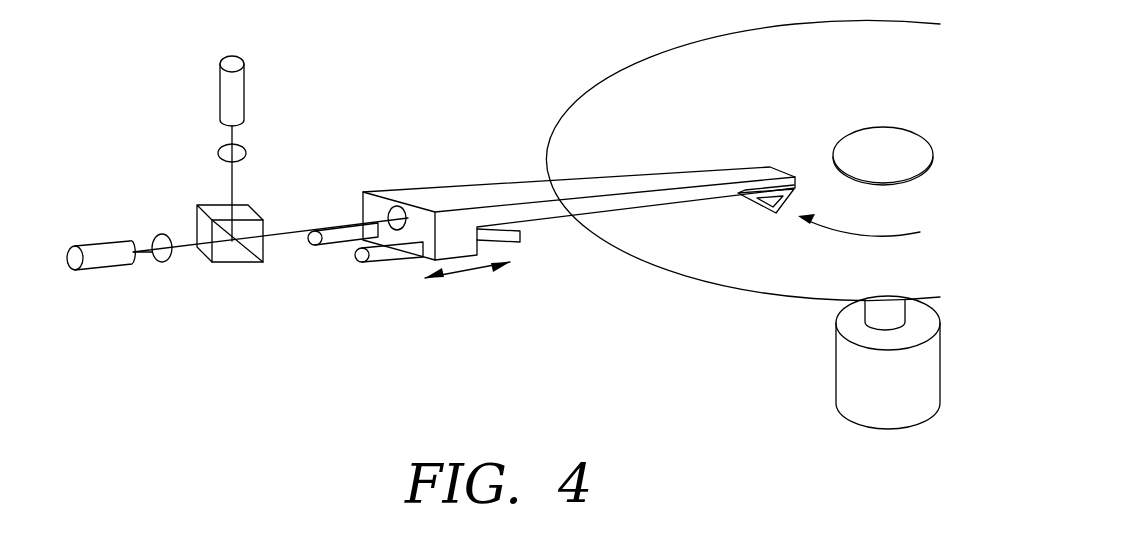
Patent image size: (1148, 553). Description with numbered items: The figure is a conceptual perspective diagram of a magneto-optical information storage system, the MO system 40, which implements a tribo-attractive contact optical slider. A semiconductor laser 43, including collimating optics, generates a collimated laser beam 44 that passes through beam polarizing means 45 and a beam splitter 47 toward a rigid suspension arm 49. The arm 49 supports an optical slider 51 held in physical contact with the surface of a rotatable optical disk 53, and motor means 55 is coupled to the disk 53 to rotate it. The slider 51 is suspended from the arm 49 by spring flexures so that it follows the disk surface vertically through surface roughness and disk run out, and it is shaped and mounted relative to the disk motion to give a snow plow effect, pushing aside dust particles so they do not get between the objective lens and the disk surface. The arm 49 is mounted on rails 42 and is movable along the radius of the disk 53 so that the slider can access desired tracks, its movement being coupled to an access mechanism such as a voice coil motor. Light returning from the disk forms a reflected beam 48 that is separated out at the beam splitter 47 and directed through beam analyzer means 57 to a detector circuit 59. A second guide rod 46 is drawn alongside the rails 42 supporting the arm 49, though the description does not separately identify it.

The MO system 40 is at (422, 337).
The rails 42 is at (383, 262).
The semiconductor laser 43 is at (113, 268).
The collimated laser beam 44 is at (138, 254).
The beam polarizing means 45 is at (157, 234).
The guide rod 46 is at (292, 230).
The beam splitter 47 is at (242, 263).
The reflected beam 48 is at (233, 137).
The rigid suspension arm 49 is at (462, 182).
The optical slider 51 is at (748, 210).
The optical disk 53 is at (812, 83).
The motor means 55 is at (848, 384).
The beam analyzer means 57 is at (220, 148).
The detector circuit 59 is at (240, 57).